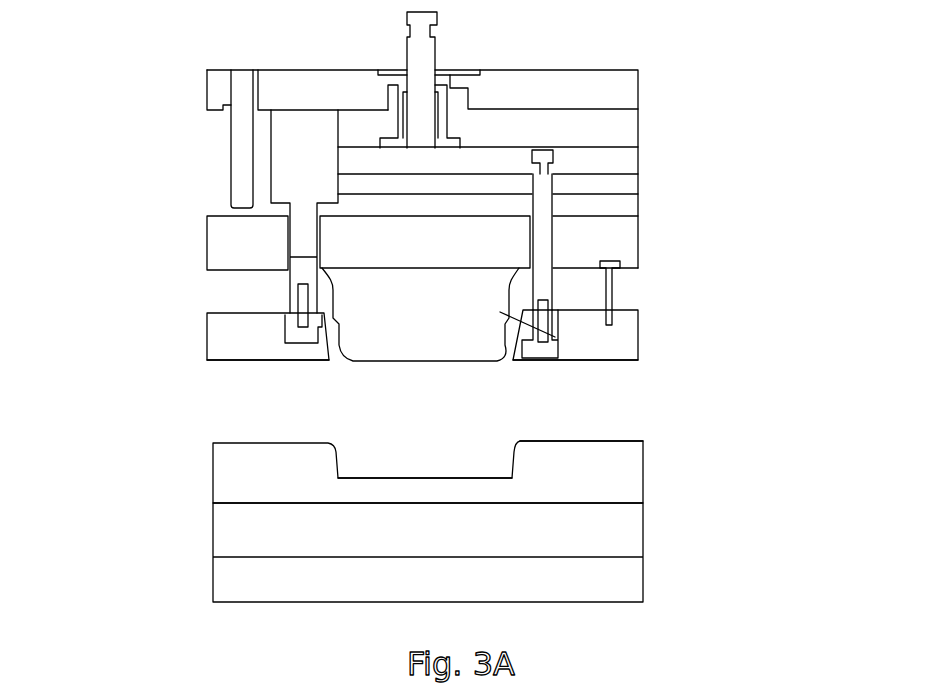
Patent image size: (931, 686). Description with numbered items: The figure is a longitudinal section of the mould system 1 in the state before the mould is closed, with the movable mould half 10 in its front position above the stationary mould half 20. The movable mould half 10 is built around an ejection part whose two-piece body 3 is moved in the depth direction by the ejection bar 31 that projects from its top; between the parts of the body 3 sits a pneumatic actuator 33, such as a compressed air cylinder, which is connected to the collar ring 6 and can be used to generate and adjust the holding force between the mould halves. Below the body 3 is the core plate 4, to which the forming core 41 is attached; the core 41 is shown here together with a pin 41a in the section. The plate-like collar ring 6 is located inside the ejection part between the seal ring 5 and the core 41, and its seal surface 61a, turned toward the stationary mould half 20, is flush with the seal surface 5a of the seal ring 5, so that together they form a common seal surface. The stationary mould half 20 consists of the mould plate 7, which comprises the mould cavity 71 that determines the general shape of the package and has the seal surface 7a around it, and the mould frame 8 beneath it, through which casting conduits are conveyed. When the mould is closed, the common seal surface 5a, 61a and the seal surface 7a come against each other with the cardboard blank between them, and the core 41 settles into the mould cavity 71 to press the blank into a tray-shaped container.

The mould system 1 is at (752, 185).
The movable mould half 10 is at (115, 182).
The stationary mould half 20 is at (142, 525).
The body of the ejection part 3 is at (628, 87).
The ejection bar 31 is at (412, 47).
The pneumatic actuator 33 is at (285, 165).
The core plate 4 is at (217, 233).
The core 41 is at (555, 337).
The pin 41a is at (516, 296).
The seal ring 5 is at (217, 338).
The seal surface of the seal ring 5a is at (250, 364).
The collar ring 6 is at (288, 312).
The seal surface of the collar 61a is at (320, 362).
The mould plate 7 is at (230, 478).
The seal surface of the mould plate 7a is at (586, 439).
The mould cavity 71 is at (430, 475).
The mould frame 8 is at (630, 585).